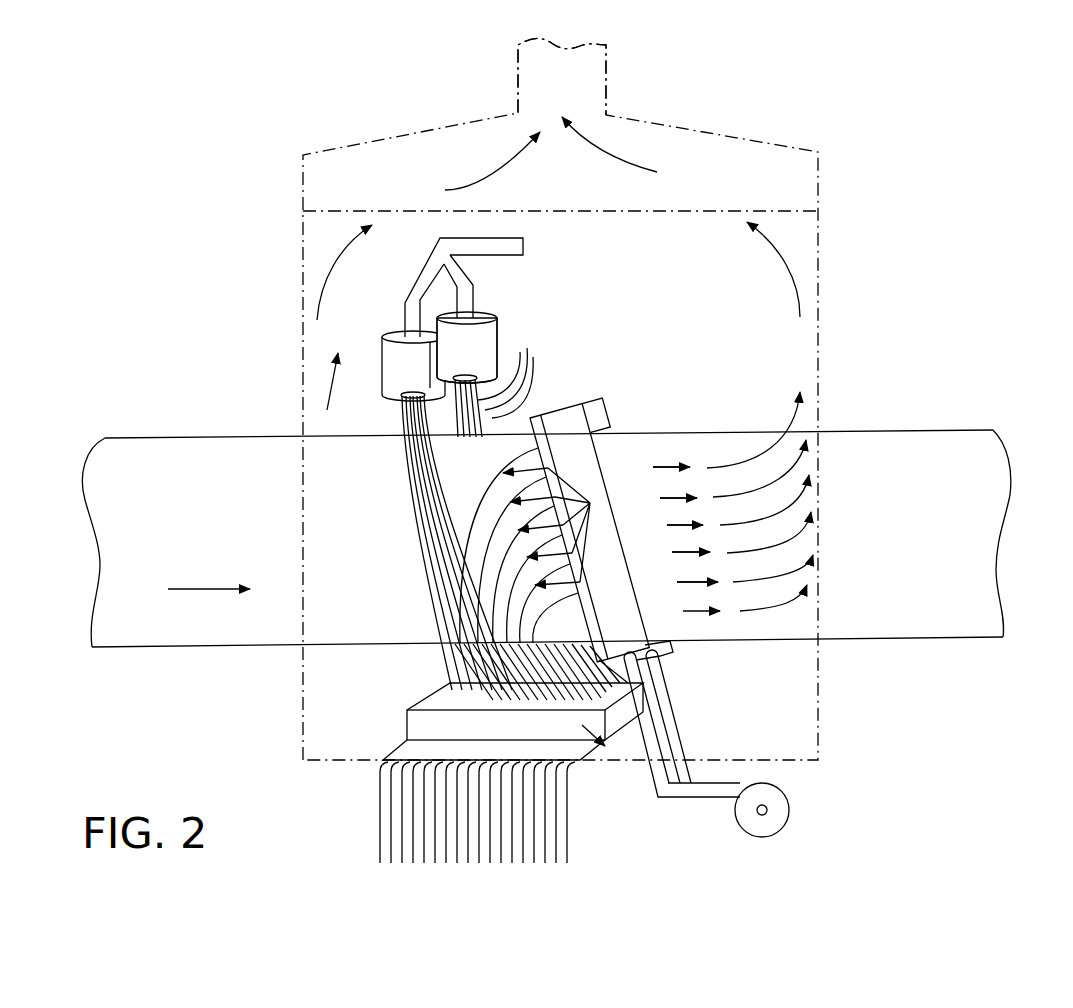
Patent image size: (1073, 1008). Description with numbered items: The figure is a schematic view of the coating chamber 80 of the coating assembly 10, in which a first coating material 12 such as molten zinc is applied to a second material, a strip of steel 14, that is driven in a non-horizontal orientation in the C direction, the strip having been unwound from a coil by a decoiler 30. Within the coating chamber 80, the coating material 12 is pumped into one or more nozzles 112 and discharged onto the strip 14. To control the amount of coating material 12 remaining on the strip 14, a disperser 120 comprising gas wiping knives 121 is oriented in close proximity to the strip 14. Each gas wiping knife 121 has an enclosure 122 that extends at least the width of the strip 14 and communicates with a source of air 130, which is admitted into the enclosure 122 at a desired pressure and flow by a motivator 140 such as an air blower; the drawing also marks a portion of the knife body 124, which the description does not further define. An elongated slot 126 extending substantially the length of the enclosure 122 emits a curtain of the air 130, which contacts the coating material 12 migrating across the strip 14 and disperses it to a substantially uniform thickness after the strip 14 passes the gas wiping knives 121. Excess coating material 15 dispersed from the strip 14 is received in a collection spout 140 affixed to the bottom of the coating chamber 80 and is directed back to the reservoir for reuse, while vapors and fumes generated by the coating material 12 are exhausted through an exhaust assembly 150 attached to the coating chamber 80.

The coating assembly 10 is at (920, 285).
The coating material 12 is at (362, 479).
The strip of steel 14 is at (226, 512).
The excess coating material 15 is at (455, 662).
The decoiler 30 is at (543, 612).
The coating chamber 80 is at (820, 222).
The nozzles 112 is at (396, 332).
The disperser 120 is at (566, 405).
The gas wiping knives 121 is at (550, 407).
The enclosure 122 is at (673, 653).
The plate surface 124 is at (637, 632).
The elongated slot 126 is at (572, 433).
The air 130 is at (590, 503).
The collection spout 140 is at (605, 746).
The exhaust assembly 150 is at (582, 80).
The drive direction C is at (187, 589).